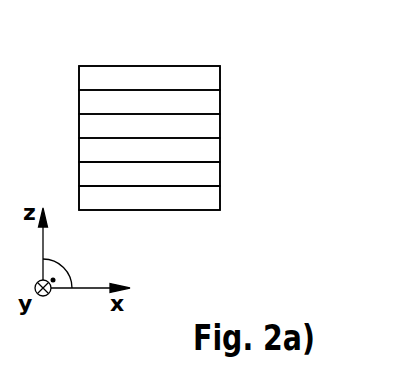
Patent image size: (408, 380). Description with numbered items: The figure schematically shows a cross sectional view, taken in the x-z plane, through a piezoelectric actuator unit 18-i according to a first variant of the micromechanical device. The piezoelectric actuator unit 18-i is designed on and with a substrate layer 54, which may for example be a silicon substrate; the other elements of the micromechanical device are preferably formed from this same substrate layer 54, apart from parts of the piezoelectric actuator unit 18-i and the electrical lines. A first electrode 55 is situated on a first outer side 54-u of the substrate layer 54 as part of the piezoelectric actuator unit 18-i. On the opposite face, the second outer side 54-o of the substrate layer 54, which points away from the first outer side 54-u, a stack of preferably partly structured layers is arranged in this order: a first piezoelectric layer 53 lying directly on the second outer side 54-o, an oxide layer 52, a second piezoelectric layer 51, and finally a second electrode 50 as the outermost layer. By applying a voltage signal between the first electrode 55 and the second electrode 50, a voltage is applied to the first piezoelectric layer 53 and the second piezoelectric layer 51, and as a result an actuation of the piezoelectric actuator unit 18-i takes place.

The piezoelectric actuator unit 18-i is at (145, 65).
The second electrode 50 is at (213, 80).
The second piezoelectric layer 51 is at (213, 104).
The oxide layer 52 is at (213, 127).
The first piezoelectric layer 53 is at (213, 152).
The substrate layer 54 is at (213, 175).
The first electrode 55 is at (213, 199).
The second outer side 54-o is at (100, 162).
The first outer side 54-u is at (98, 187).